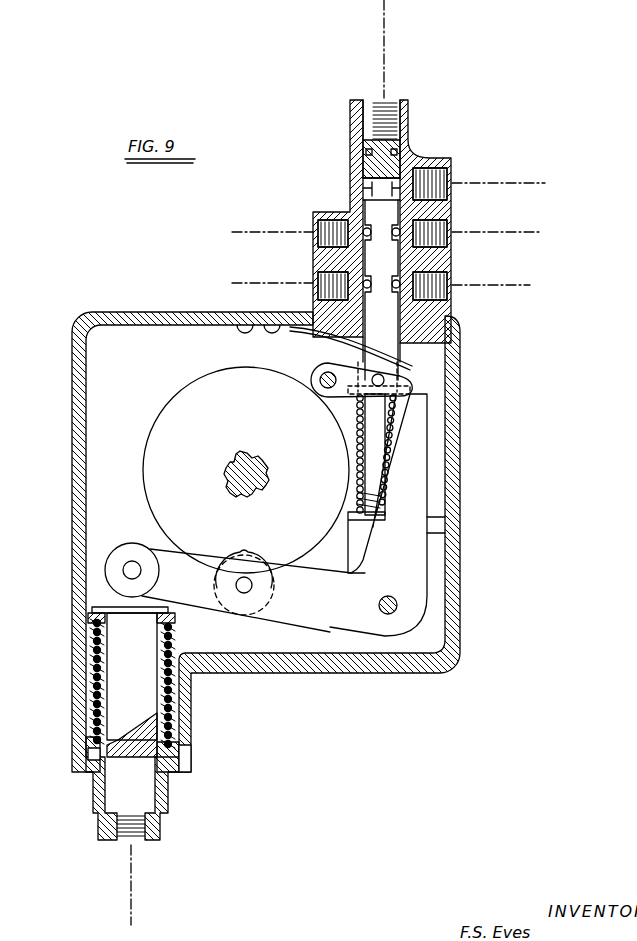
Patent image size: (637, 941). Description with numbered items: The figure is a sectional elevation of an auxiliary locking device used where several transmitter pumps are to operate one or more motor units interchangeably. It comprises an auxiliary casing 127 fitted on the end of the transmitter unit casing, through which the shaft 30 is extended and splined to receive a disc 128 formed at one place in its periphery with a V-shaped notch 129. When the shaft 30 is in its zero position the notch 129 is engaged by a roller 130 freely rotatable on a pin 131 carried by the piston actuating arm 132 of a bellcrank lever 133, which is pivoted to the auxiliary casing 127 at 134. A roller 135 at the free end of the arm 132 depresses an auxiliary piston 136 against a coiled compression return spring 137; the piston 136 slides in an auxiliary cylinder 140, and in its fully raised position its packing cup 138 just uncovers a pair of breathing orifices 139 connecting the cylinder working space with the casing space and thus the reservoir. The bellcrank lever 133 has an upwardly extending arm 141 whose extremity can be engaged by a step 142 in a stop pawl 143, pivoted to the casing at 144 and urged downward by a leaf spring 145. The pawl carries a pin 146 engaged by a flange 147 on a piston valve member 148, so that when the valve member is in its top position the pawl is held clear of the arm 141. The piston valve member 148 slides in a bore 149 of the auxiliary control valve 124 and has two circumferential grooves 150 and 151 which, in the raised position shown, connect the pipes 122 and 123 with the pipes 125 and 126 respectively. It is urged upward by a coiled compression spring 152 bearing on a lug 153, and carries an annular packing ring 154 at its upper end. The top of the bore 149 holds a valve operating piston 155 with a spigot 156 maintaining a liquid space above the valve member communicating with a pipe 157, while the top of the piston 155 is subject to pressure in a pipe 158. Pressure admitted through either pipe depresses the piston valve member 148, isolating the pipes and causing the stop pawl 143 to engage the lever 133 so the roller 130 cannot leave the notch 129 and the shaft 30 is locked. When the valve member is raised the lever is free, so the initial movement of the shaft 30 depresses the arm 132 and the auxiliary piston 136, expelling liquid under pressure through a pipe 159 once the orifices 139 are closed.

The shaft 30 is at (221, 477).
The pipe 122 is at (508, 232).
The pipe 123 is at (508, 285).
The auxiliary control valve 124 is at (350, 158).
The pipe 125 is at (257, 232).
The pipe 126 is at (257, 283).
The auxiliary casing 127 is at (182, 320).
The disc 128 is at (163, 426).
The V-shaped notch 129 is at (258, 548).
The roller 130 is at (243, 606).
The pin 131 is at (240, 590).
The piston actuating arm 132 is at (293, 612).
The bellcrank lever 133 is at (369, 647).
The pivot 134 is at (398, 603).
The roller 135 is at (110, 570).
The auxiliary piston 136 is at (118, 697).
The coiled compression return spring 137 is at (93, 633).
The packing cup 138 is at (93, 750).
The breathing orifices 139 is at (178, 777).
The auxiliary cylinder 140 is at (168, 796).
The upwardly extending arm 141 is at (418, 483).
The step 142 is at (412, 393).
The stop pawl 143 is at (413, 384).
The pivot 144 is at (326, 372).
The leaf spring 145 is at (402, 362).
The pin 146 is at (360, 394).
The flange 147 is at (375, 395).
The piston valve member 148 is at (449, 311).
The bore 149 is at (313, 260).
The circumferential groove 150 is at (446, 268).
The circumferential groove 151 is at (449, 213).
The coiled compression spring 152 is at (398, 428).
The lug 153 is at (436, 531).
The annular packing ring 154 is at (365, 198).
The valve operating piston 155 is at (418, 142).
The spigot 156 is at (451, 172).
The pipe 157 is at (505, 182).
The pipe 158 is at (385, 63).
The pipe 159 is at (132, 890).